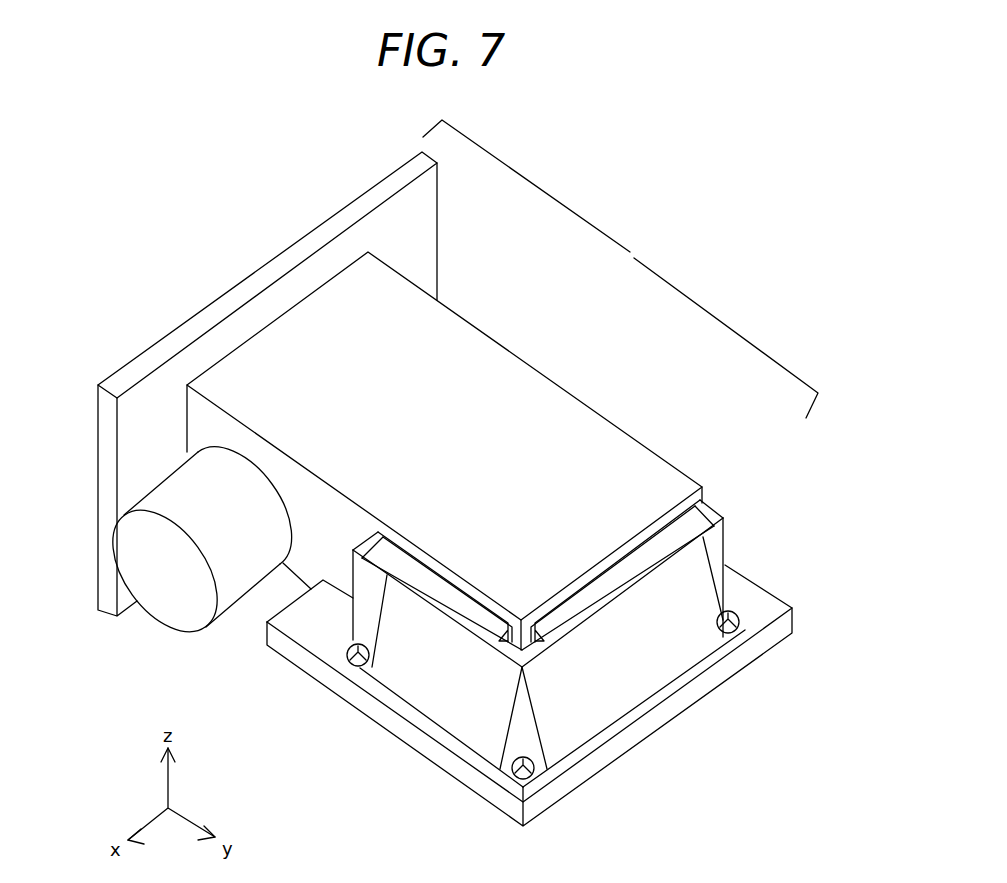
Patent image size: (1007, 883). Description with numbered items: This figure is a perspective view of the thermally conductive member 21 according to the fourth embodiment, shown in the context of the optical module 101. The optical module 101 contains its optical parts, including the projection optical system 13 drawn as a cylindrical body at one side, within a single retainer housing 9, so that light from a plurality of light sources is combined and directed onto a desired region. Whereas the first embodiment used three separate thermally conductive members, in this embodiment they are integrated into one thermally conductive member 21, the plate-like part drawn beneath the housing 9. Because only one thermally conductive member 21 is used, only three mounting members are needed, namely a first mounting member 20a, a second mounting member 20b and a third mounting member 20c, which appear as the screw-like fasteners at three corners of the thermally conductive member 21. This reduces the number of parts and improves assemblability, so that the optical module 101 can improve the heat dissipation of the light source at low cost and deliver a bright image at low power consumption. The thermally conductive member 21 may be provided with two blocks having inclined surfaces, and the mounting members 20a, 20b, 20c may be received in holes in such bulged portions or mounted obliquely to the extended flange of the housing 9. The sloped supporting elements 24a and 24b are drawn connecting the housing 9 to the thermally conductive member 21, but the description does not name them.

The optical module 101 is at (633, 256).
The retainer housing 9 is at (307, 560).
The projection optical system 13 is at (157, 598).
The thermally conductive member 21 is at (413, 712).
The leaf spring 24a is at (481, 712).
The leaf spring 24b is at (640, 683).
The first mounting member 20a is at (350, 672).
The second mounting member 20b is at (533, 776).
The third mounting member 20c is at (740, 636).